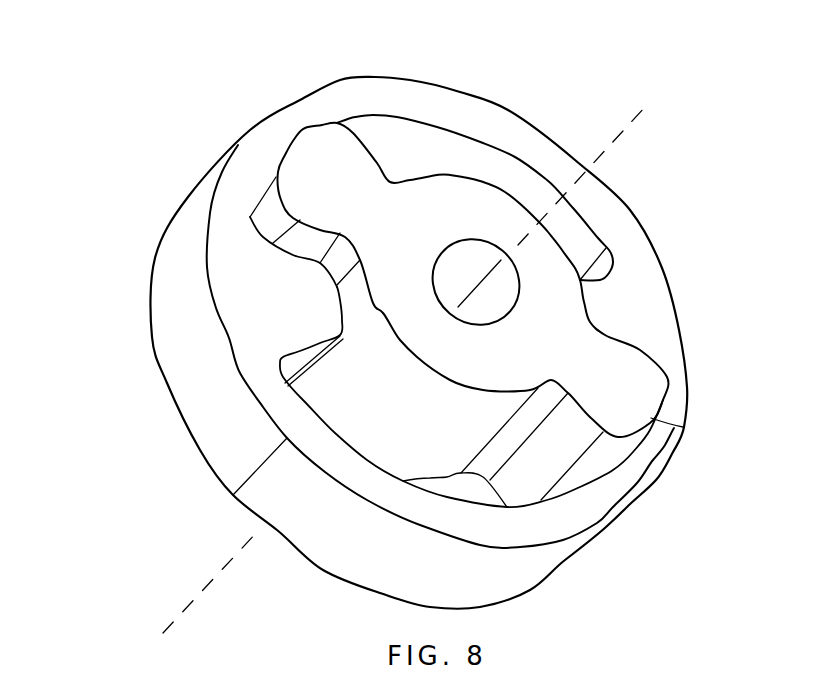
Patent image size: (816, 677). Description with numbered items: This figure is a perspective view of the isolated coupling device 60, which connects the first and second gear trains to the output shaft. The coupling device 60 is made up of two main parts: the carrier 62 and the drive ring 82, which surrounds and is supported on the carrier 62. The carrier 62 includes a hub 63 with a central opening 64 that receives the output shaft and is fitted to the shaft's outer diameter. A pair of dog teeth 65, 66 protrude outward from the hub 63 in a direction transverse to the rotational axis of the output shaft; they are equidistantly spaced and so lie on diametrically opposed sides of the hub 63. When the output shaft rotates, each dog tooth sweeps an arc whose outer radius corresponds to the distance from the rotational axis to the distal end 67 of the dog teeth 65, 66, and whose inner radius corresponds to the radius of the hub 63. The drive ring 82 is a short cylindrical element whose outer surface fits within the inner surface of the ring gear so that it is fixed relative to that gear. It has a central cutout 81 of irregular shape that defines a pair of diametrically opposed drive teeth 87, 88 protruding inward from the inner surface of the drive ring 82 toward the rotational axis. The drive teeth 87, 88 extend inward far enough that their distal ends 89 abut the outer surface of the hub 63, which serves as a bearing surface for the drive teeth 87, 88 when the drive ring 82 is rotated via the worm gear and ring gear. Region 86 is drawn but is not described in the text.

The coupling device 60 is at (119, 93).
The carrier 62 is at (448, 200).
The hub 63 is at (553, 270).
The central opening 64 is at (485, 250).
The dog tooth 65 is at (323, 165).
The dog tooth 66 is at (640, 370).
The distal end 67 is at (275, 175).
The central cutout 81 is at (490, 500).
The drive ring 82 is at (510, 120).
The recess floor 86 is at (370, 133).
The drive tooth 87 is at (287, 305).
The drive tooth 88 is at (607, 302).
The distal end 89 is at (333, 304).